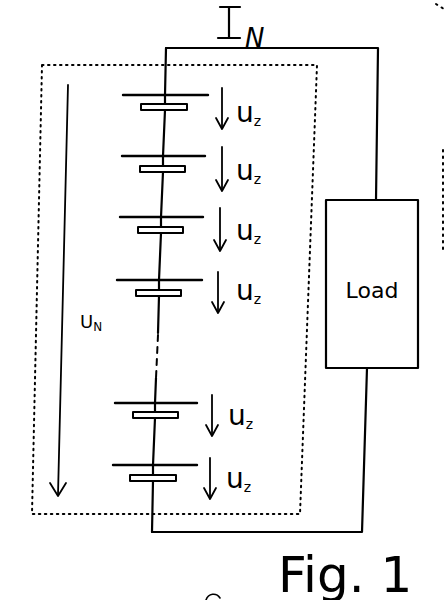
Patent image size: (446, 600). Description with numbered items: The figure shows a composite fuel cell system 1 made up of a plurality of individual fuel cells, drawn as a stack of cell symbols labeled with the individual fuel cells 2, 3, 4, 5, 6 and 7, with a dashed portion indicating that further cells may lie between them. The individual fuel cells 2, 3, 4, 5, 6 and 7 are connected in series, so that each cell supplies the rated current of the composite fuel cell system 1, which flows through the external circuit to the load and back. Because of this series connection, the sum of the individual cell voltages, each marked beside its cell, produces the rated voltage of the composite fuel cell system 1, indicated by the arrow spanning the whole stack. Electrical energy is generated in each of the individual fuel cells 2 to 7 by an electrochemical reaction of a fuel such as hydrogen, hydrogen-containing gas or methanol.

The composite fuel cell system 1 is at (82, 520).
The individual fuel cell 2 is at (133, 104).
The individual fuel cell 3 is at (132, 166).
The individual fuel cell 4 is at (130, 228).
The individual fuel cell 5 is at (128, 291).
The individual fuel cell 6 is at (120, 417).
The individual fuel cell 7 is at (117, 478).